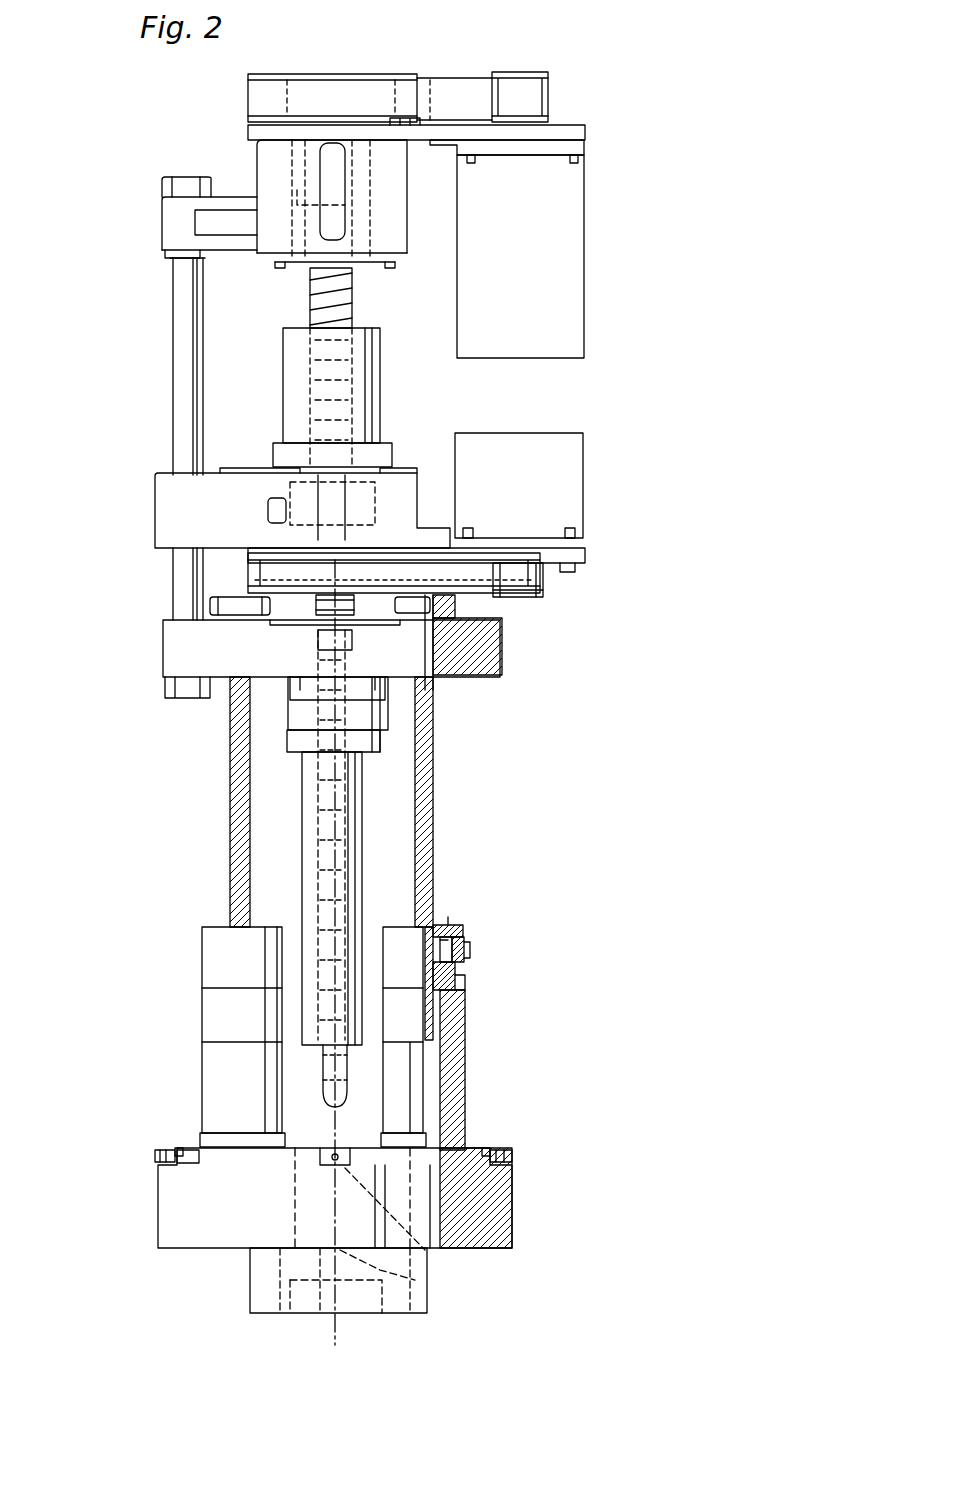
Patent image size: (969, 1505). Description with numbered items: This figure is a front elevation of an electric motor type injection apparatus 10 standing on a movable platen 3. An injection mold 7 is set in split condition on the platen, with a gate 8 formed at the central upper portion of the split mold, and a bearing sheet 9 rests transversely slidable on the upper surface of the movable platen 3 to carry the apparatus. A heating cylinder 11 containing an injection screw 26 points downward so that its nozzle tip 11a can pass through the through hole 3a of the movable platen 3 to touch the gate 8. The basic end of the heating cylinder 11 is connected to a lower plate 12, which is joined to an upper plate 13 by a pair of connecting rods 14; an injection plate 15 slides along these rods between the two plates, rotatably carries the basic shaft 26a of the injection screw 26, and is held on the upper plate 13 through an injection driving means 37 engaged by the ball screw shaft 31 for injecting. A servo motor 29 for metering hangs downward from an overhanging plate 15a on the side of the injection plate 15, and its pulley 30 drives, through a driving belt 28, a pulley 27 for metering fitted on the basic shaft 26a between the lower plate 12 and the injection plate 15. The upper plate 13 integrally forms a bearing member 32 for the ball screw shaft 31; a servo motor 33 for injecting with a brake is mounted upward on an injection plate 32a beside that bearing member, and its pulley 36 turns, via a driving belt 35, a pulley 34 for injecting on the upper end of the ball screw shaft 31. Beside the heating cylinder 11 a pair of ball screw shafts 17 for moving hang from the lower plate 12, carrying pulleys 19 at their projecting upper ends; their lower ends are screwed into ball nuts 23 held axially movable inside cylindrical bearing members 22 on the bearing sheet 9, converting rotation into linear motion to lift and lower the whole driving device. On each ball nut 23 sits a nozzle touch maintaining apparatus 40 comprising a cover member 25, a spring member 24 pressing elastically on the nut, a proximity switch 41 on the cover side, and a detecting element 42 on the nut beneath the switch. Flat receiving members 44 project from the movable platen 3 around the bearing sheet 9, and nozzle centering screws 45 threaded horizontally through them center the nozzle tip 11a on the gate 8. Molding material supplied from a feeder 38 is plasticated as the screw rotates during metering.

The movable platen 3 is at (170, 1192).
The through hole 3a is at (284, 1310).
The injection mold 7 is at (268, 1292).
The gate 8 is at (427, 1285).
The bearing sheet 9 is at (188, 1152).
The injection apparatus 10 is at (210, 748).
The heating cylinder 11 is at (310, 805).
The nozzle tip 11a is at (325, 1080).
The lower plate 12 is at (170, 651).
The upper plate 13 is at (240, 228).
The connecting rods 14 is at (185, 352).
The injection plate 15 is at (168, 498).
The overhanging plate 15a is at (572, 557).
The ball screw shafts 17 is at (238, 870).
The pulleys 19 is at (220, 600).
The bearing members 22 is at (215, 1080).
The ball nuts 23 is at (450, 1032).
The spring member 24 is at (465, 927).
The cover member 25 is at (468, 945).
The injection screw 26 is at (350, 815).
The basic shaft 26a is at (305, 605).
The pulley for metering 27 is at (375, 660).
The driving belt 28 is at (398, 580).
The servo motor for metering 29 is at (565, 462).
The pulley 30 is at (540, 595).
The ball screw shaft for injecting 31 is at (318, 305).
The bearing member 32 is at (270, 170).
The injection plate 32a is at (570, 128).
The servo motor for injecting 33 is at (565, 192).
The pulley for injecting 34 is at (343, 74).
The driving belt 35 is at (458, 88).
The pulley 36 is at (545, 72).
The nut block 37 is at (298, 393).
The feeder 38 is at (390, 700).
The nozzle touch maintaining apparatus 40 is at (461, 917).
The proximity switch 41 is at (470, 962).
The detecting element 42 is at (470, 985).
The receiving members 44 is at (158, 1156).
The nozzle centering screws 45 is at (170, 1150).